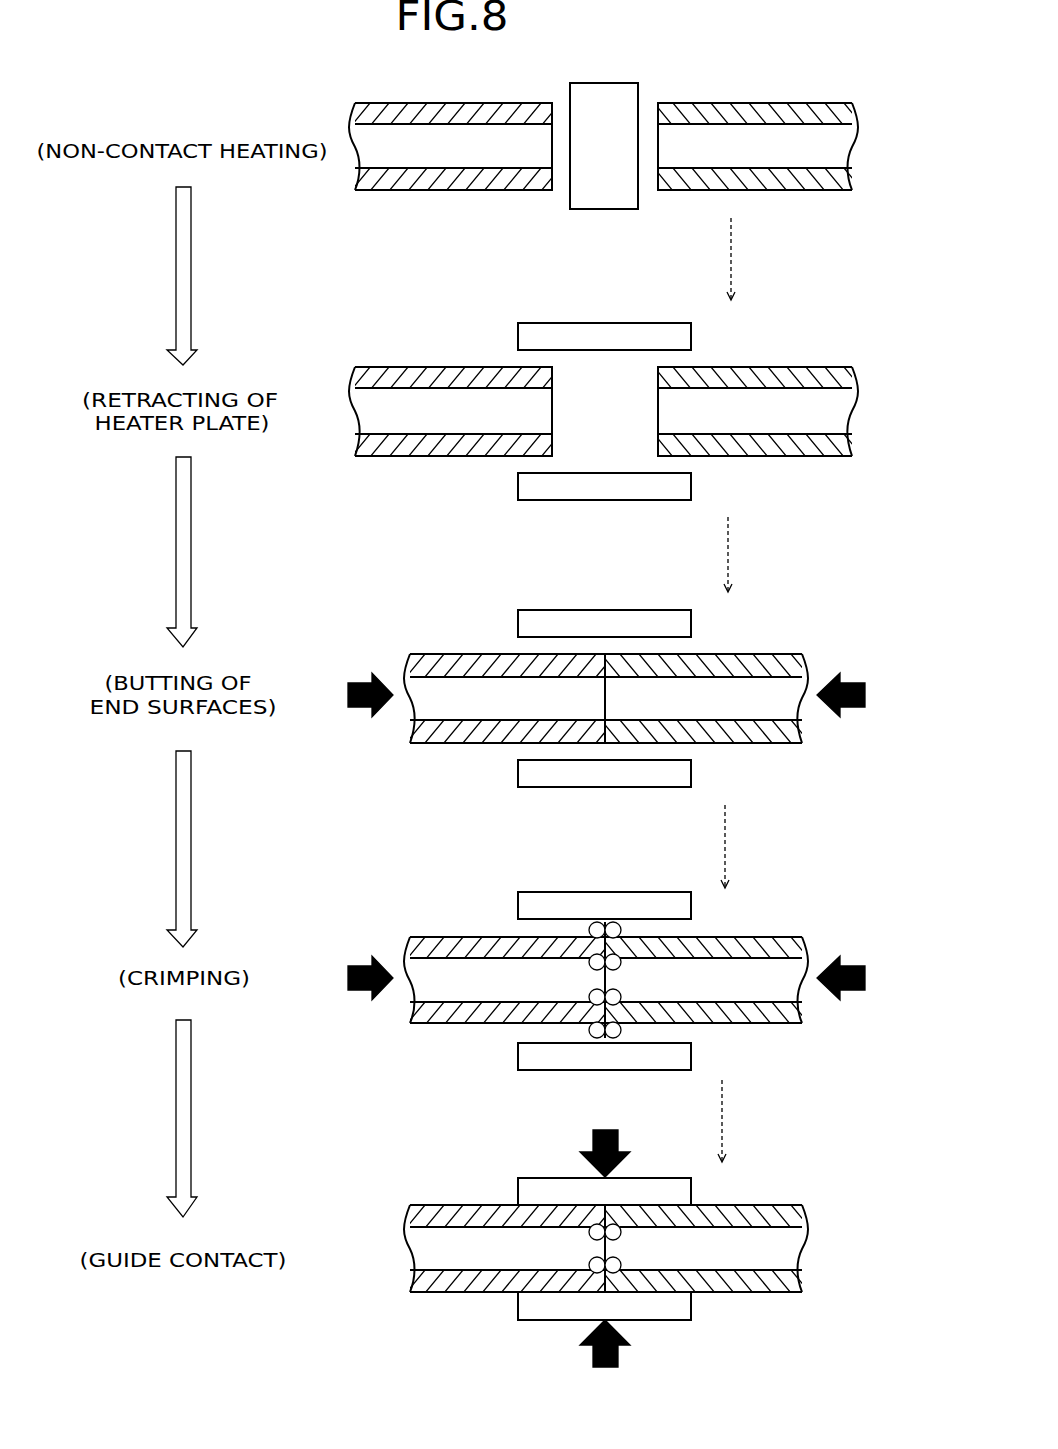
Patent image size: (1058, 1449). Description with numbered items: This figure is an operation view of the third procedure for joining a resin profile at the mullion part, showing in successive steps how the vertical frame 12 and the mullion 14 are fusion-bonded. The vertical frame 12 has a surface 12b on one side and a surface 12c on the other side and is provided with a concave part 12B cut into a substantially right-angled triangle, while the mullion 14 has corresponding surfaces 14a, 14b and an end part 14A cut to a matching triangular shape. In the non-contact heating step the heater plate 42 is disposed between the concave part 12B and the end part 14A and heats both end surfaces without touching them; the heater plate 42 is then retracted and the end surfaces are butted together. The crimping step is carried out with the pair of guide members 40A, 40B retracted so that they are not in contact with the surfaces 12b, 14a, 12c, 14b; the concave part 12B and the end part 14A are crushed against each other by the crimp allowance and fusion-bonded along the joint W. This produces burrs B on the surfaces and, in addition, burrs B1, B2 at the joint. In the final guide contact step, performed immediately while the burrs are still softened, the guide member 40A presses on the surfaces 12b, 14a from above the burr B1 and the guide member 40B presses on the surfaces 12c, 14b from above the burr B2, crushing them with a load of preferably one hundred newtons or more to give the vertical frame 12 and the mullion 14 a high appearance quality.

The vertical frame 12 is at (420, 110).
The surface of the vertical frame 12b is at (473, 103).
The surface of the vertical frame 12c is at (461, 190).
The concave part 12B is at (553, 132).
The mullion 14 is at (778, 103).
The surface of the mullion 14a is at (727, 103).
The surface of the mullion 14b is at (771, 190).
The end part 14A is at (658, 132).
The heater plate 42 is at (603, 88).
The guide member 40A is at (606, 330).
The guide member 40B is at (550, 488).
The welded portion W is at (608, 978).
The burrs B is at (590, 963).
The burr B1 is at (603, 922).
The burr B2 is at (613, 1038).